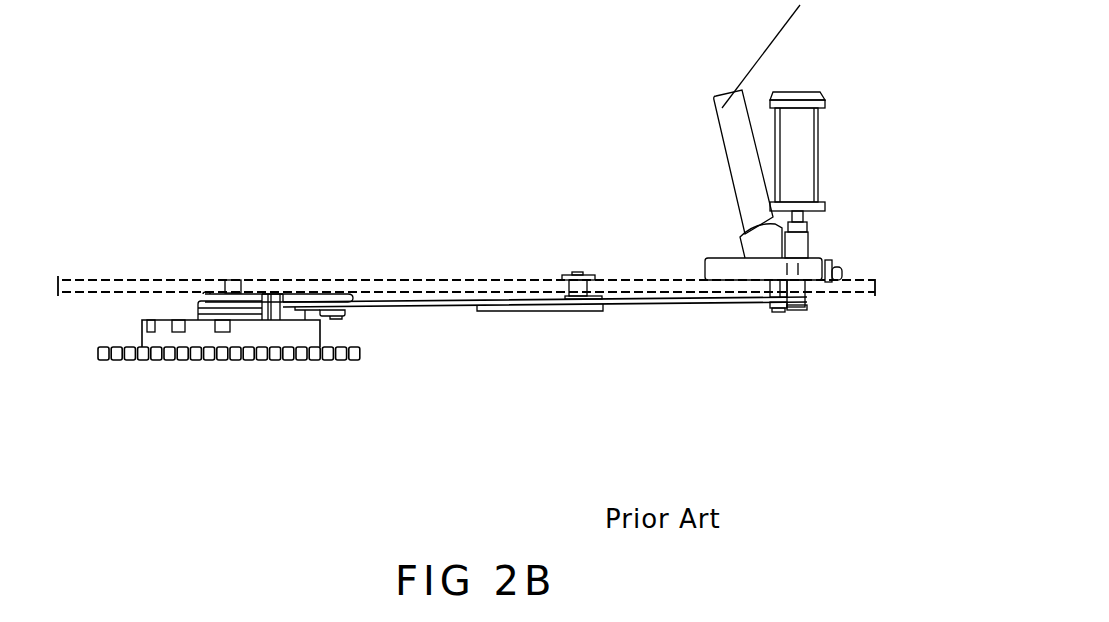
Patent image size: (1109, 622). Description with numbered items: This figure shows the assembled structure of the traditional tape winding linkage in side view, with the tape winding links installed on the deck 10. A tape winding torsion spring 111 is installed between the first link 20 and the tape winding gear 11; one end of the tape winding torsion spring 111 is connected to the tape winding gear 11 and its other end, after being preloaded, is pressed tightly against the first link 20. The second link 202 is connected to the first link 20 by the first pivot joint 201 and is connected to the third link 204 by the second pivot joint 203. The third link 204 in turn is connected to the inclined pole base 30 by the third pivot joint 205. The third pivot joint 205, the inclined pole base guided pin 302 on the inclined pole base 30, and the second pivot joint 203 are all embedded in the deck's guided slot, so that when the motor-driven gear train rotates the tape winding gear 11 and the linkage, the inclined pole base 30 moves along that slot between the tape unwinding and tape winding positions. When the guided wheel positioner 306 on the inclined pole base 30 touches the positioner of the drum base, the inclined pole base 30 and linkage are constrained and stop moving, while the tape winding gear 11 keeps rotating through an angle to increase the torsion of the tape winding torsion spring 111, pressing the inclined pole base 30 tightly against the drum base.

The deck 10 is at (117, 287).
The tape winding gear 11 is at (228, 362).
The tape winding torsion spring 111 is at (228, 300).
The first link 20 is at (283, 296).
The first pivot joint 201 is at (362, 298).
The second link 202 is at (478, 307).
The second pivot joint 203 is at (586, 276).
The third link 204 is at (660, 302).
The third pivot joint 205 is at (778, 290).
The inclined pole base 30 is at (723, 265).
The inclined pole base guided pin 302 is at (797, 290).
The guided wheel positioner 306 is at (818, 202).